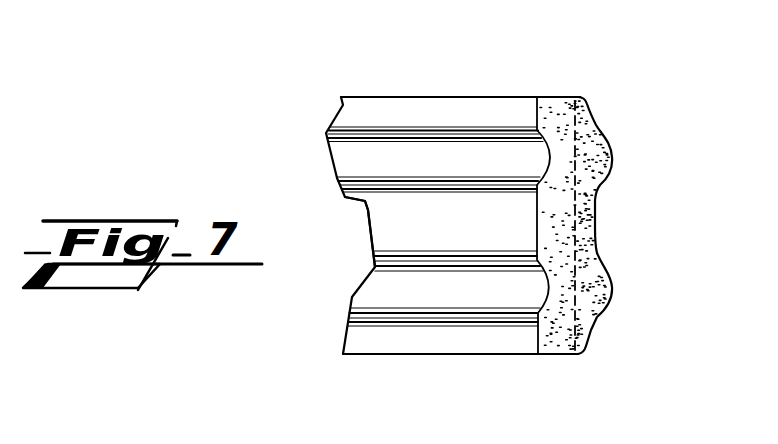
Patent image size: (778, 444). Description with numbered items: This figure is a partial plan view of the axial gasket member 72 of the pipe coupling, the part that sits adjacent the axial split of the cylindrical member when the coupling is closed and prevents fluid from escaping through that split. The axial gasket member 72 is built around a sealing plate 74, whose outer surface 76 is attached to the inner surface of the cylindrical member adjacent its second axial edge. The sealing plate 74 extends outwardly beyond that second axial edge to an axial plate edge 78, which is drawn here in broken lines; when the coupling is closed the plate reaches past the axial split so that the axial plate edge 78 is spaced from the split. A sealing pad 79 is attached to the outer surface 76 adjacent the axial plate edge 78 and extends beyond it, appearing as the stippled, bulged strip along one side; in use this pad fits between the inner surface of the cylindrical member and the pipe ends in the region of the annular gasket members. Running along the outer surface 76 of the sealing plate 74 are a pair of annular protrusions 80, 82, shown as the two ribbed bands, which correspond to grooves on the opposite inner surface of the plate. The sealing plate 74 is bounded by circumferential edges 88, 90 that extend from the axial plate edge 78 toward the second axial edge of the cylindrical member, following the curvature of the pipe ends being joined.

The axial gasket member 72 is at (588, 95).
The sealing plate 74 is at (377, 222).
The outer surface 76 is at (486, 239).
The axial plate edge 78 is at (598, 320).
The sealing pad 79 is at (597, 215).
The annular protrusion 80 is at (423, 290).
The annular protrusion 82 is at (418, 155).
The circumferential edge 88 is at (441, 354).
The circumferential edge 90 is at (487, 97).